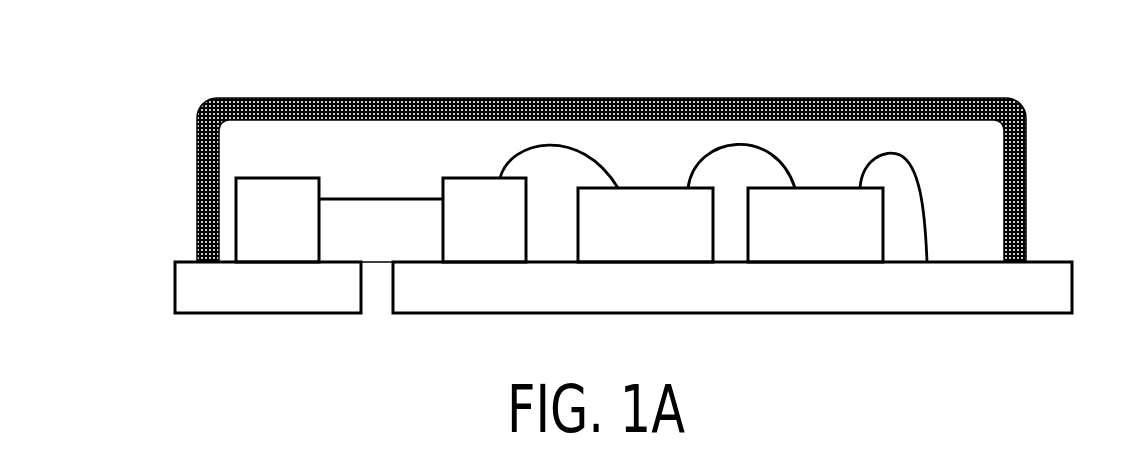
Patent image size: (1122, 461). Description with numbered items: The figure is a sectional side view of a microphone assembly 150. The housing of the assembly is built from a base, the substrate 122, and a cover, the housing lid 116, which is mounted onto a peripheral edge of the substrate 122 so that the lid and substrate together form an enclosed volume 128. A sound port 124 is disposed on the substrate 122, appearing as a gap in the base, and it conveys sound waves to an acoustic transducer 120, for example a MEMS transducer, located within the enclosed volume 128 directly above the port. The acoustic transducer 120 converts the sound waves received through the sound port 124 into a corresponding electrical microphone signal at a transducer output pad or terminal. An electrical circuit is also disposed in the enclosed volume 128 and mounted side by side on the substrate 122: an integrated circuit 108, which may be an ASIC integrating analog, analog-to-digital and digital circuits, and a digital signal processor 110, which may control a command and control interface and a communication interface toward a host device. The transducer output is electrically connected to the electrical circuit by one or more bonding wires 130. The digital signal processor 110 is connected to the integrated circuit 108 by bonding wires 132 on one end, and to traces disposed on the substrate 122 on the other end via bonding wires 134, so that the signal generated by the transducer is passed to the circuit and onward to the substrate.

The microphone assembly 150 is at (178, 98).
The housing lid 116 is at (318, 98).
The enclosed volume 128 is at (279, 150).
The substrate 122 is at (175, 278).
The sound port 124 is at (374, 322).
The acoustic transducer 120 is at (382, 180).
The integrated circuit 108 is at (633, 180).
The digital signal processor 110 is at (809, 179).
The bonding wires 130 is at (583, 139).
The bonding wires 132 is at (747, 138).
The bonding wires 134 is at (903, 152).